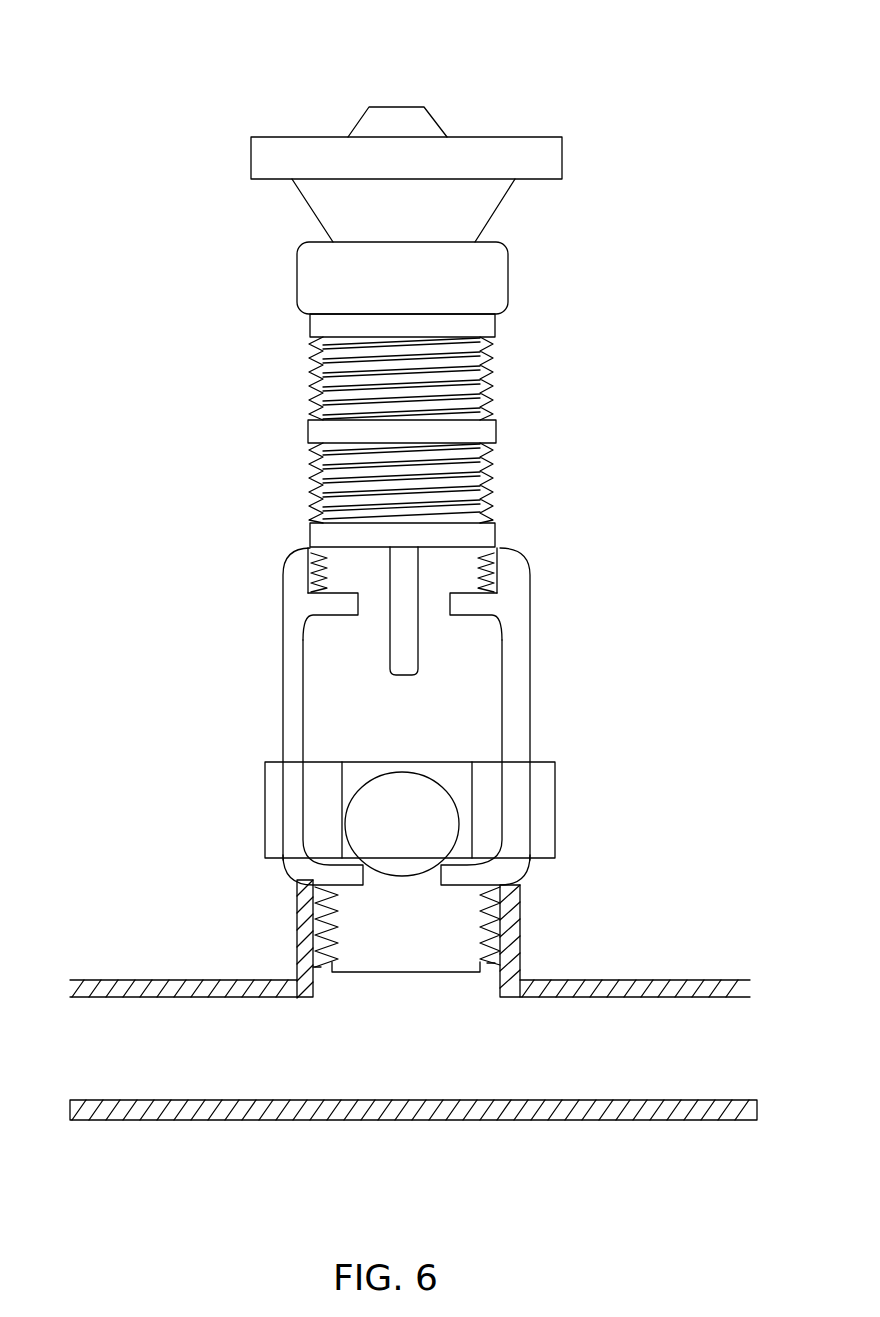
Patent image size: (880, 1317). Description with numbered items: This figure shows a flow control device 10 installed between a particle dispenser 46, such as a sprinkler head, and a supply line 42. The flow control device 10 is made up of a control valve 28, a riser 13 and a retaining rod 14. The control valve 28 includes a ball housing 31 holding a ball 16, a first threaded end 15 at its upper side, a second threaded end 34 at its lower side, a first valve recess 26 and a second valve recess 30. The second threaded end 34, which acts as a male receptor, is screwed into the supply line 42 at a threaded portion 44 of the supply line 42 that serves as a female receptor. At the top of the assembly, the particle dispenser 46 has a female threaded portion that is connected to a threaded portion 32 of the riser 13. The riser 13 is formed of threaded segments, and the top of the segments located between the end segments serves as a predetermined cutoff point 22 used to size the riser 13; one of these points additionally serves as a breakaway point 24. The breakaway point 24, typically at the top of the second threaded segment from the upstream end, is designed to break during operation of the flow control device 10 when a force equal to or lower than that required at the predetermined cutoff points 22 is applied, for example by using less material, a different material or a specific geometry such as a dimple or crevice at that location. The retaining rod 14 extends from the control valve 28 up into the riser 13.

The flow control device 10 is at (662, 37).
The riser 13 is at (468, 443).
The retaining rod 14 is at (408, 582).
The first threaded end 15 is at (273, 593).
The ball 16 is at (397, 790).
The predetermined cutoff point 22 is at (483, 325).
The breakaway point 24 is at (322, 431).
The first valve recess 26 is at (460, 608).
The control valve 28 is at (412, 732).
The second valve recess 30 is at (450, 898).
The ball housing 31 is at (257, 632).
The threaded portion 32 is at (285, 243).
The second threaded end 34 is at (293, 883).
The supply line 42 is at (622, 985).
The threaded portion 44 is at (317, 968).
The particle dispenser 46 is at (555, 98).